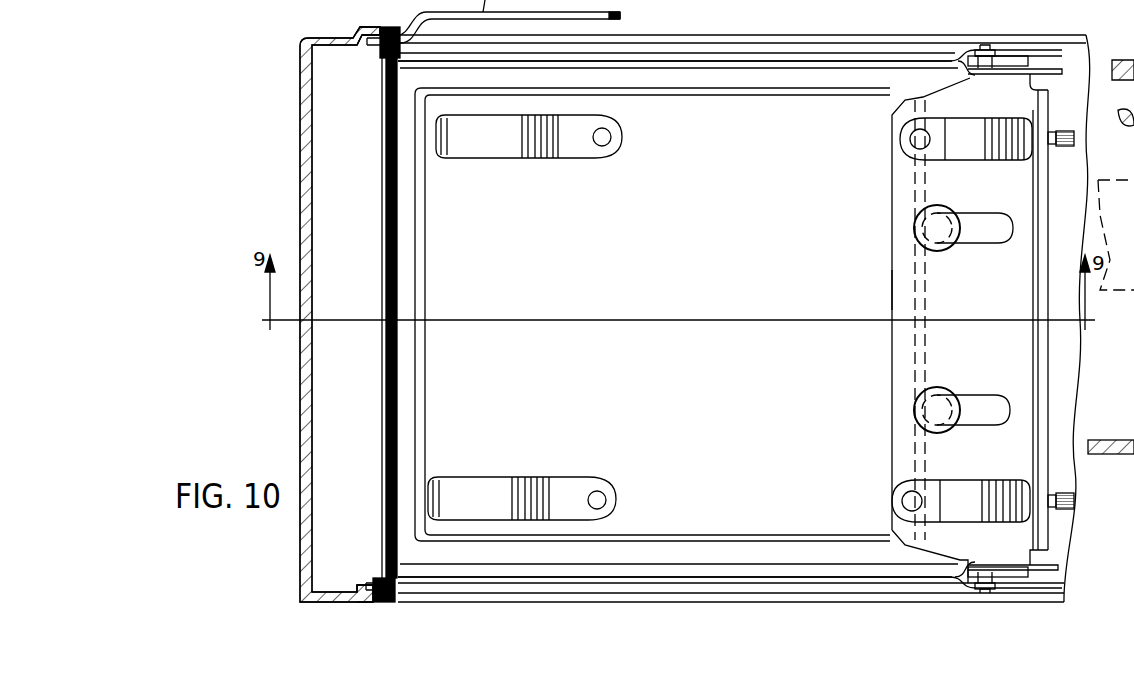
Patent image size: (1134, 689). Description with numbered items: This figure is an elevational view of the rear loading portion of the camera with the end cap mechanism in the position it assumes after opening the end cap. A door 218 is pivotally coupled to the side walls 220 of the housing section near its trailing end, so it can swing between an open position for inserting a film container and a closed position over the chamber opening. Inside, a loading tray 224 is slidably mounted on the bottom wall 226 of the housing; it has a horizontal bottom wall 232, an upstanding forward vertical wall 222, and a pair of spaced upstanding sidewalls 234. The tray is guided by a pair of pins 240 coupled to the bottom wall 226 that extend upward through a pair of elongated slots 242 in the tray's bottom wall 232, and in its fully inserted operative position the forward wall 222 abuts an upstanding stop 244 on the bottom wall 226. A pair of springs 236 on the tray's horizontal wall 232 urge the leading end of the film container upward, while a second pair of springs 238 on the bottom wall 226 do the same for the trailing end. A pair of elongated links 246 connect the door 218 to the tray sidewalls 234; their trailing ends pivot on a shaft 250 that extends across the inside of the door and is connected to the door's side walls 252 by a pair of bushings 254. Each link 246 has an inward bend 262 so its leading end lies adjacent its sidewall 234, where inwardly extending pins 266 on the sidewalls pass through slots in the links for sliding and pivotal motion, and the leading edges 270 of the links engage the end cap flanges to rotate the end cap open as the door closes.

The door 218 is at (301, 114).
The side walls 220 is at (708, 36).
The upstanding forward vertical wall 222 is at (1040, 306).
The loading tray 224 is at (876, 288).
The bottom wall 226 is at (665, 262).
The horizontal bottom wall 232 is at (902, 380).
The upstanding sidewalls 234 is at (1021, 56).
The springs 236 is at (987, 157).
The second pair of springs 238 is at (496, 150).
The pins 240 is at (943, 206).
The elongated slots 242 is at (979, 244).
The upstanding stop 244 is at (1074, 502).
The elongated links 246 is at (664, 61).
The shaft 250 is at (385, 206).
The side walls 252 is at (356, 36).
The bushings 254 is at (378, 48).
The inward bend 262 is at (955, 77).
The pins 266 is at (986, 47).
The leading edges 270 is at (1064, 71).